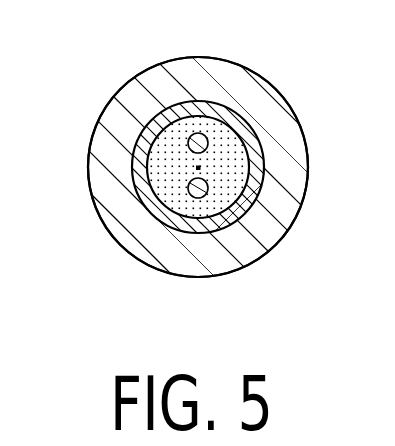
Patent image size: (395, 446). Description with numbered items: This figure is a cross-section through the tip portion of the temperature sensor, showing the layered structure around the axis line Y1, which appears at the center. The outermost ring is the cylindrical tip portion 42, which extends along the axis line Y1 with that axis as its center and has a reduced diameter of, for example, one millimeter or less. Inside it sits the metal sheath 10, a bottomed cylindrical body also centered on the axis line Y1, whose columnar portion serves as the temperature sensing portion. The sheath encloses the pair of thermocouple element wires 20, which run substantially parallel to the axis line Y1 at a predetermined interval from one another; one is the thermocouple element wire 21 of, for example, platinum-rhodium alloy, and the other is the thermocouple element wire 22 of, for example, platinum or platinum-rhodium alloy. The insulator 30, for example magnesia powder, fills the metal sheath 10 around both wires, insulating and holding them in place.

The metal sheath 10 is at (136, 225).
The pair of thermocouple element wires 20 is at (162, 161).
The thermocouple element wire 21 is at (190, 137).
The thermocouple element wire 22 is at (191, 193).
The insulator 30 is at (228, 182).
The tip portion 42 is at (79, 86).
The axis line Y1 is at (200, 167).